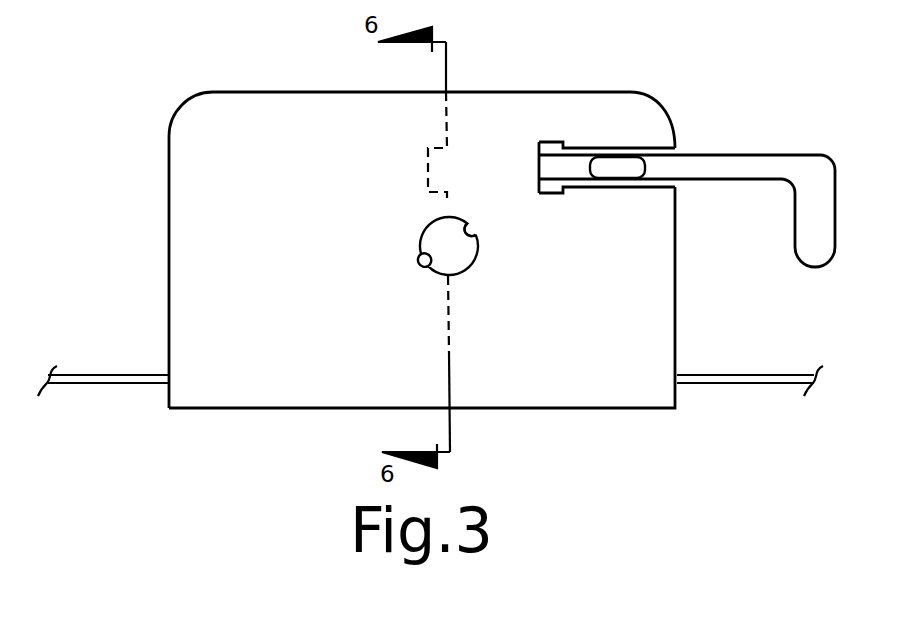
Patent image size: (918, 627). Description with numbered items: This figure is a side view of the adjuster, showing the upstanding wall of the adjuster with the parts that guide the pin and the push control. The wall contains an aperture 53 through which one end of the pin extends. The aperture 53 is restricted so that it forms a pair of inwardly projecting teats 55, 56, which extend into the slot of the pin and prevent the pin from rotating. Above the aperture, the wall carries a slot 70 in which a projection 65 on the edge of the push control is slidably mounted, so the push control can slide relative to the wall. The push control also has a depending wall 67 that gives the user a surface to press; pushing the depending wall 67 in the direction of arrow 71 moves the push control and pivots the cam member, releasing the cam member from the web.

The aperture 53 is at (425, 230).
The teat 55 is at (432, 261).
The teat 56 is at (470, 229).
The projection 65 is at (610, 163).
The depending wall 67 is at (826, 226).
The slot 70 is at (576, 148).
The arrow 71 is at (717, 133).